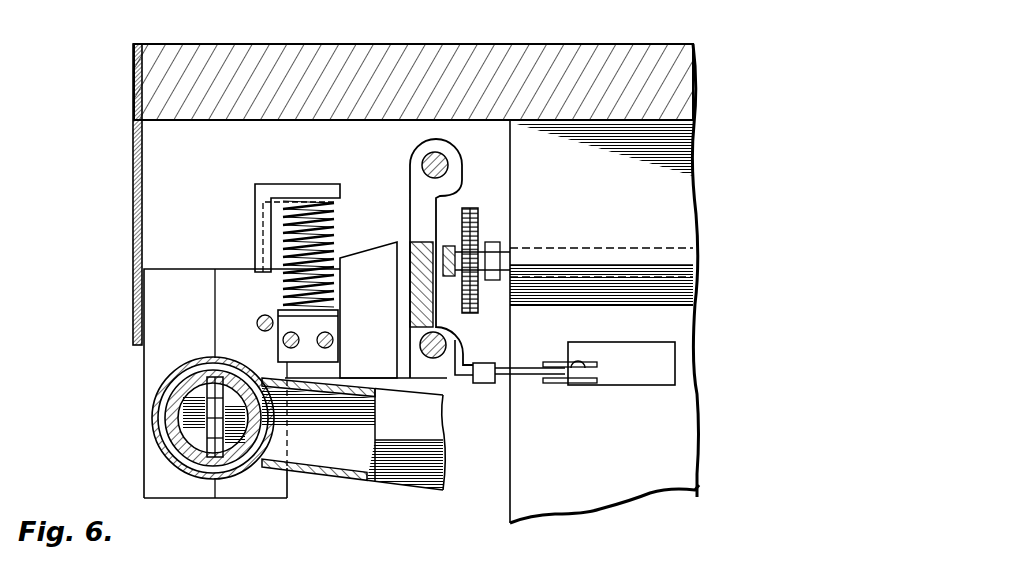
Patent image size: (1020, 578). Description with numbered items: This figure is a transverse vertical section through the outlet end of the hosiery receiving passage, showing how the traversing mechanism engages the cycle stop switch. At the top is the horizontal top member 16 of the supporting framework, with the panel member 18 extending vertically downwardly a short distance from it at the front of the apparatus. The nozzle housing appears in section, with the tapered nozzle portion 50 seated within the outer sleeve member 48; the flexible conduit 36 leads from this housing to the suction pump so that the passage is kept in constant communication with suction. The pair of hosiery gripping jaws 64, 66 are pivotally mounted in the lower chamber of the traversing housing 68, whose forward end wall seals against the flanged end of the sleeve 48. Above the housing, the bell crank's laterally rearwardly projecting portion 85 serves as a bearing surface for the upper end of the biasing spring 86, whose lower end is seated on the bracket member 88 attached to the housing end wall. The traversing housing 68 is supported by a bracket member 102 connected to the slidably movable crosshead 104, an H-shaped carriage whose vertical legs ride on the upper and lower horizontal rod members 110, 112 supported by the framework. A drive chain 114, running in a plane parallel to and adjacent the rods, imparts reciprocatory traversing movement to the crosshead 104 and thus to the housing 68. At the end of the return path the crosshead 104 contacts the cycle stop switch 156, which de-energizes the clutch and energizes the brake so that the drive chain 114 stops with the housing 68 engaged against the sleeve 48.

The top member 16 is at (360, 44).
The panel member 18 is at (132, 94).
The flexible conduit 36 is at (394, 492).
The outer sleeve member 48 is at (264, 368).
The nozzle portion 50 is at (202, 376).
The gripping jaw 64 is at (164, 401).
The gripping jaw 66 is at (164, 428).
The traversing housing 68 is at (144, 362).
The laterally rearwardly projecting portion 85 is at (340, 192).
The biasing spring 86 is at (282, 290).
The bracket member 88 is at (338, 318).
The bracket member 102 is at (381, 293).
The crosshead 104 is at (404, 212).
The upper horizontal rod member 110 is at (444, 158).
The lower horizontal rod member 112 is at (442, 378).
The drive chain 114 is at (470, 210).
The cycle stop switch 156 is at (620, 382).